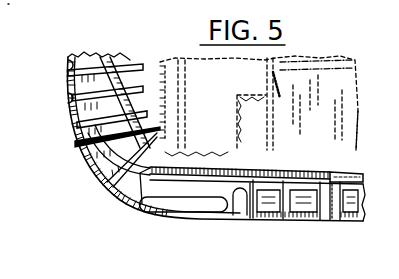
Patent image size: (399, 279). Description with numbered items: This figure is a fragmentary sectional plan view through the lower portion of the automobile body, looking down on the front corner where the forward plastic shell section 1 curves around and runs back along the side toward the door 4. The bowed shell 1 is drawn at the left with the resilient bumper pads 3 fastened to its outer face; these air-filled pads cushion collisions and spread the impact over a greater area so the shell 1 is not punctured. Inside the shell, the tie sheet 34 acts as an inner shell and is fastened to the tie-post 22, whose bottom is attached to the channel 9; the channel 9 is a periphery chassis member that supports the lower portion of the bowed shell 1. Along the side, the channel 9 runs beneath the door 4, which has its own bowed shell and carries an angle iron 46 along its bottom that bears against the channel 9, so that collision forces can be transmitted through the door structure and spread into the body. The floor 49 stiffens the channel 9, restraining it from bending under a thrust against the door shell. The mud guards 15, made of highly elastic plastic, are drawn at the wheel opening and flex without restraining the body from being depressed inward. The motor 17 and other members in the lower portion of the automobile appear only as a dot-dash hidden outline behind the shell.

The forward plastic shell section 1 is at (80, 140).
The resilient bumper pads 3 is at (62, 66).
The door 4 is at (362, 201).
The channels 9 is at (302, 171).
The mud guards 15 is at (139, 202).
The motor 17 is at (167, 58).
The tie-post 22 is at (104, 58).
The tie sheet 34 is at (104, 62).
The angle iron 46 is at (346, 172).
The floor 49 is at (354, 137).